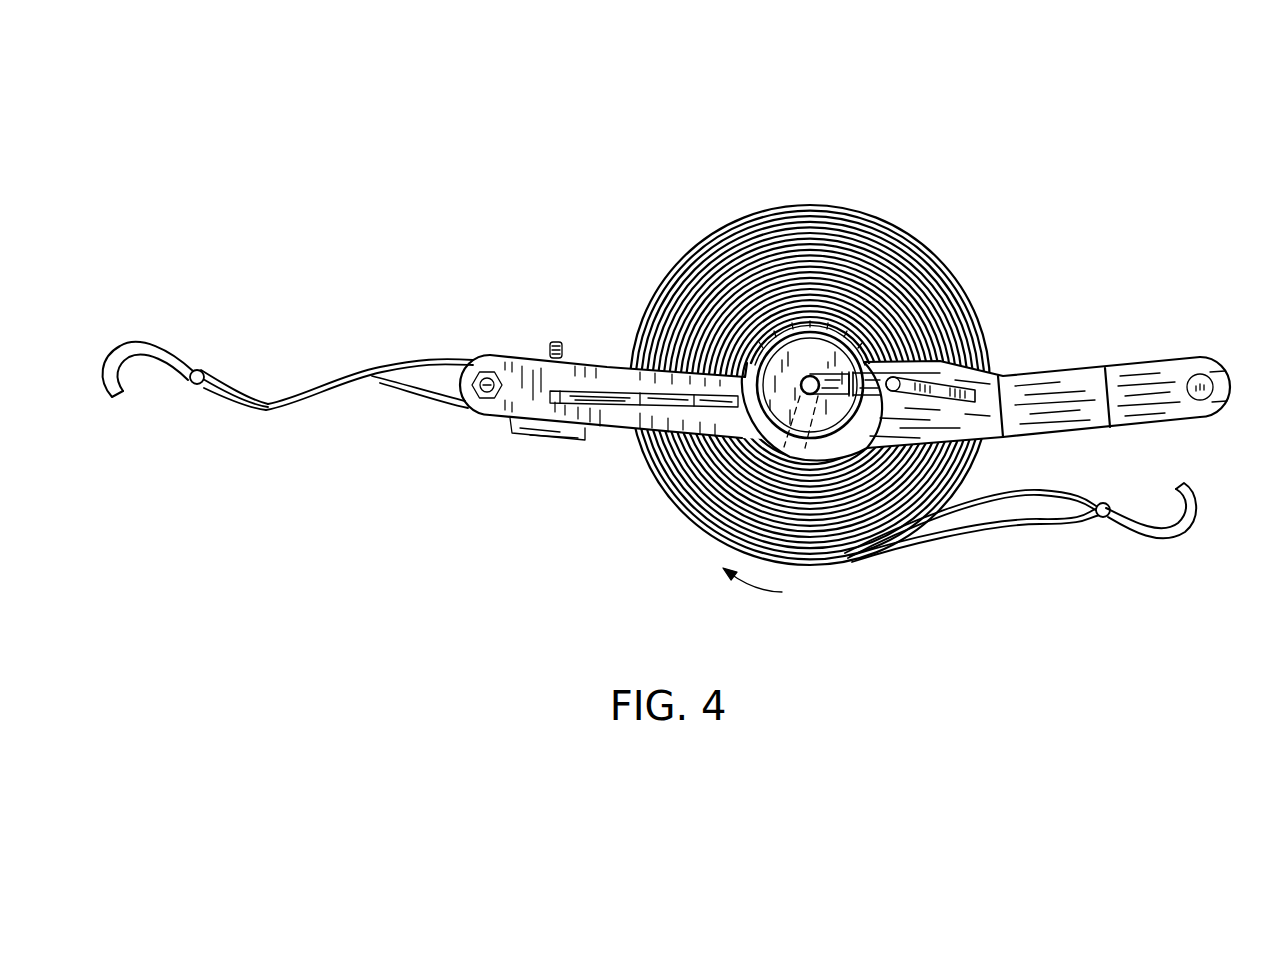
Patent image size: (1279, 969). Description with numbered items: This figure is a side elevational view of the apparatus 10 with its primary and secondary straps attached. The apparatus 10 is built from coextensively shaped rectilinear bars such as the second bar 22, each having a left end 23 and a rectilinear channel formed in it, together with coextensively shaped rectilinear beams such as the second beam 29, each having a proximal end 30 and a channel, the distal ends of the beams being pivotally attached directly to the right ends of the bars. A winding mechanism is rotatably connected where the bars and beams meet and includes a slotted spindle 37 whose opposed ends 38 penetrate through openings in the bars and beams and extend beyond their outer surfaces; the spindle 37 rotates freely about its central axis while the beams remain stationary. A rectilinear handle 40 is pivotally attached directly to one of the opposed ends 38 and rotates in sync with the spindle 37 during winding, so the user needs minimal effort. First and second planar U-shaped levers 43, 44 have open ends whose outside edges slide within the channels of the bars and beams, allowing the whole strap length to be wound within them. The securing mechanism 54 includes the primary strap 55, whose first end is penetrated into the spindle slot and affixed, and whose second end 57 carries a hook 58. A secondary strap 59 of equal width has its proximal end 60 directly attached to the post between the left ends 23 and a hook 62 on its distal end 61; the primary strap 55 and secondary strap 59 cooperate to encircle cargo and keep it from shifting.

The apparatus 10 is at (219, 157).
The second bar 22 is at (628, 425).
The left end 23 is at (505, 357).
The second beam 29 is at (1075, 380).
The proximal end 30 is at (1222, 378).
The spindle 37 is at (813, 355).
The opposed ends 38 is at (832, 326).
The handle 40 is at (889, 392).
The first lever 43 is at (627, 398).
The second lever 44 is at (943, 385).
The securing mechanism 54 is at (618, 292).
The primary strap 55 is at (720, 243).
The second end 57 is at (1057, 527).
The hook 58 is at (1160, 537).
The secondary strap 59 is at (317, 391).
The proximal end 60 is at (434, 402).
The distal end 61 is at (214, 393).
The hook 62 is at (142, 343).